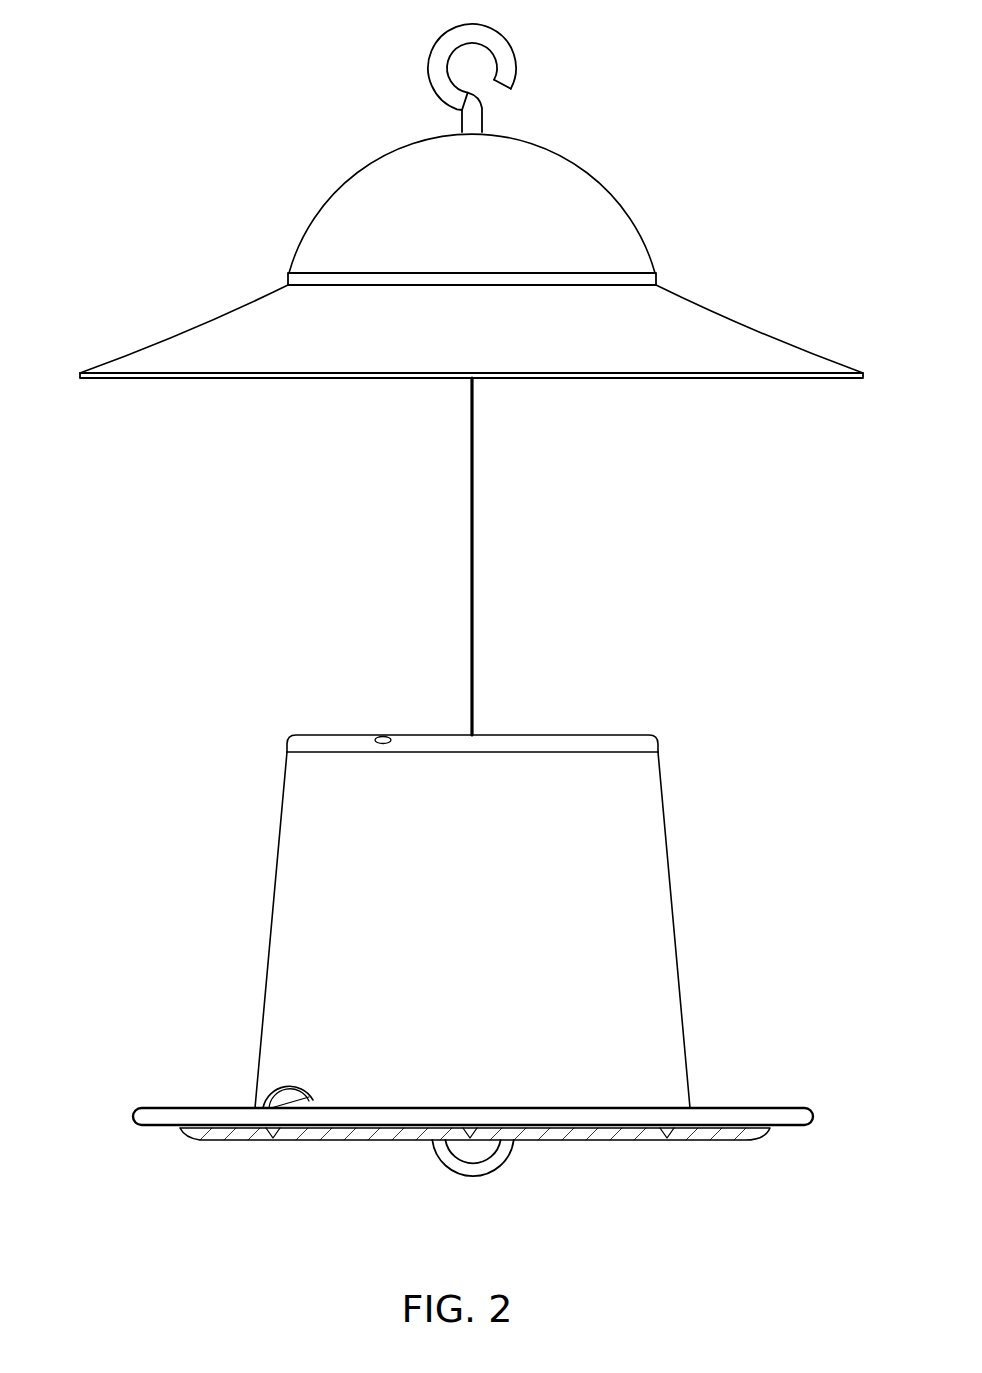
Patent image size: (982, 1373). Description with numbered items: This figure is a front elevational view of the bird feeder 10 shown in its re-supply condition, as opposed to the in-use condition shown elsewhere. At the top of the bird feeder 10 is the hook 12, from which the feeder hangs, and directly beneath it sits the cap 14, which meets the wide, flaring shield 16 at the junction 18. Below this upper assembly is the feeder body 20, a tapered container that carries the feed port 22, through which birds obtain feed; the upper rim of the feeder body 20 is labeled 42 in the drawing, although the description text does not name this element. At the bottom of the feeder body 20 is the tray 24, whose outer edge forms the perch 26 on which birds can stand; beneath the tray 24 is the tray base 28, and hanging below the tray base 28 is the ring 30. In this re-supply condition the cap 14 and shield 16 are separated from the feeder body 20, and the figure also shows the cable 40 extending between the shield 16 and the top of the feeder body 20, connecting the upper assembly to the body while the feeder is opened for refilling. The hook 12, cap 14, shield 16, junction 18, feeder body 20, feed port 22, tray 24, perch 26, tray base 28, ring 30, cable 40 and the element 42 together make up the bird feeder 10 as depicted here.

The bird feeder 10 is at (617, 200).
The hook 12 is at (437, 45).
The cap 14 is at (368, 197).
The shield 16 is at (207, 327).
The junction 18 is at (658, 280).
The feeder body 20 is at (288, 863).
The feed port 22 is at (288, 1087).
The tray 24 is at (133, 1122).
The perch 26 is at (798, 1115).
The tray base 28 is at (355, 1133).
The ring 30 is at (505, 1167).
The cable 40 is at (477, 597).
The lid rim 42 is at (583, 740).